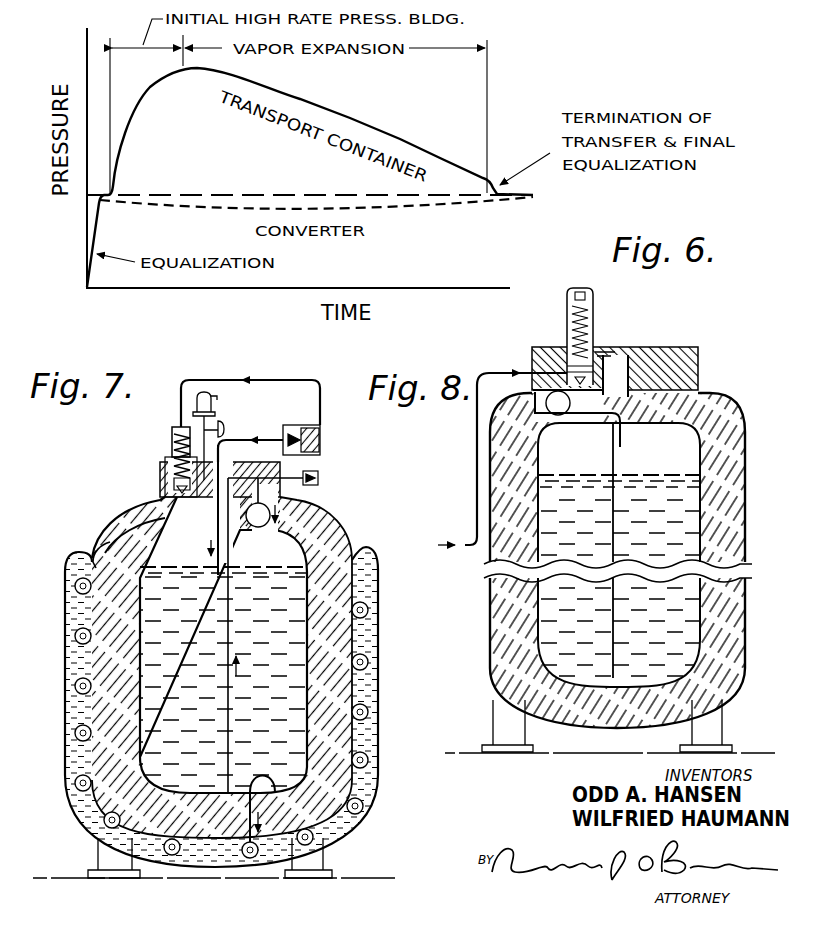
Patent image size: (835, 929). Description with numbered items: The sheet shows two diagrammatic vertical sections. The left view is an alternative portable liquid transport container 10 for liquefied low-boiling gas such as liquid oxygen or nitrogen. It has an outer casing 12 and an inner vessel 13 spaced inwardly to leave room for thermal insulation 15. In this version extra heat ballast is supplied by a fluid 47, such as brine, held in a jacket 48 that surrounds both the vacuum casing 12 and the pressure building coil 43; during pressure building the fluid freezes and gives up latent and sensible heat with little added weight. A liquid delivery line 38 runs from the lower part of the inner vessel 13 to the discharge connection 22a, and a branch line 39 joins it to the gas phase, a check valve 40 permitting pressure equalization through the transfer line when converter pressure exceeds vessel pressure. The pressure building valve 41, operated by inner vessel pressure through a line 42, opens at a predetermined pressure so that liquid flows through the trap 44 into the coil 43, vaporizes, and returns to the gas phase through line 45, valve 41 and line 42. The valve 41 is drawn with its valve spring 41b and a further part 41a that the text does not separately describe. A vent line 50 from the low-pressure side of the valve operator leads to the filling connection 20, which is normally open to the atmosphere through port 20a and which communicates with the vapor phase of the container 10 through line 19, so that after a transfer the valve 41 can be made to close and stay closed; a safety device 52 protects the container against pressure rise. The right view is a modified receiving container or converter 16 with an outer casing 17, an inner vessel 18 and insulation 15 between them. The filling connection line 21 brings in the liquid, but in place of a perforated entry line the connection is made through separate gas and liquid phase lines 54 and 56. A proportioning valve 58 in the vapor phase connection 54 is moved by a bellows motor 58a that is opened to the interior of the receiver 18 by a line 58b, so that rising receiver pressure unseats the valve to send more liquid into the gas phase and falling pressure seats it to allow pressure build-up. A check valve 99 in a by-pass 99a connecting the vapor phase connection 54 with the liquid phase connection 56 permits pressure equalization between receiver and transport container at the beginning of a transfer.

In FIG. 7, the portable liquid transport container 10 is at (110, 522).
In FIG. 7, the outer casing 12 is at (72, 612).
In FIG. 7, the inner vessel 13 is at (92, 808).
In FIG. 7, the thermal insulation 15 is at (110, 760).
In FIG. 8, the thermal insulation 15 is at (745, 563).
In FIG. 8, the liquid receiving container 16 is at (486, 580).
In FIG. 8, the outer casing 17 is at (745, 472).
In FIG. 8, the inner vessel 18 is at (700, 515).
In FIG. 7, the line 19 is at (256, 440).
In FIG. 7, the filling connection 20 is at (302, 420).
In FIG. 7, the port 20a is at (320, 430).
In FIG. 8, the filling connection line 21 is at (518, 372).
In FIG. 7, the discharge connection 22a is at (320, 482).
In FIG. 7, the liquid delivery line 38 is at (228, 762).
In FIG. 7, the branch line 39 is at (262, 492).
In FIG. 7, the check valve 40 is at (262, 527).
In FIG. 7, the pressure building valve 41 is at (167, 494).
In FIG. 7, the valve seat 41a is at (176, 467).
In FIG. 7, the valve spring 41b is at (174, 442).
In FIG. 7, the line 42 is at (204, 520).
In FIG. 7, the pressure building coil 43 is at (74, 734).
In FIG. 7, the trap 44 is at (262, 777).
In FIG. 7, the line 45 is at (106, 545).
In FIG. 7, the ballast fluid 47 is at (80, 655).
In FIG. 7, the jacket 48 is at (74, 690).
In FIG. 7, the vent line 50 is at (284, 380).
In FIG. 7, the safety device 52 is at (205, 392).
In FIG. 8, the gas phase line 54 is at (624, 428).
In FIG. 8, the liquid phase line 56 is at (614, 463).
In FIG. 8, the proportioning valve 58 is at (568, 372).
In FIG. 8, the bellows motor 58a is at (592, 340).
In FIG. 8, the line 58b is at (607, 350).
In FIG. 8, the check valve 99 is at (556, 415).
In FIG. 8, the by-pass 99a is at (576, 420).